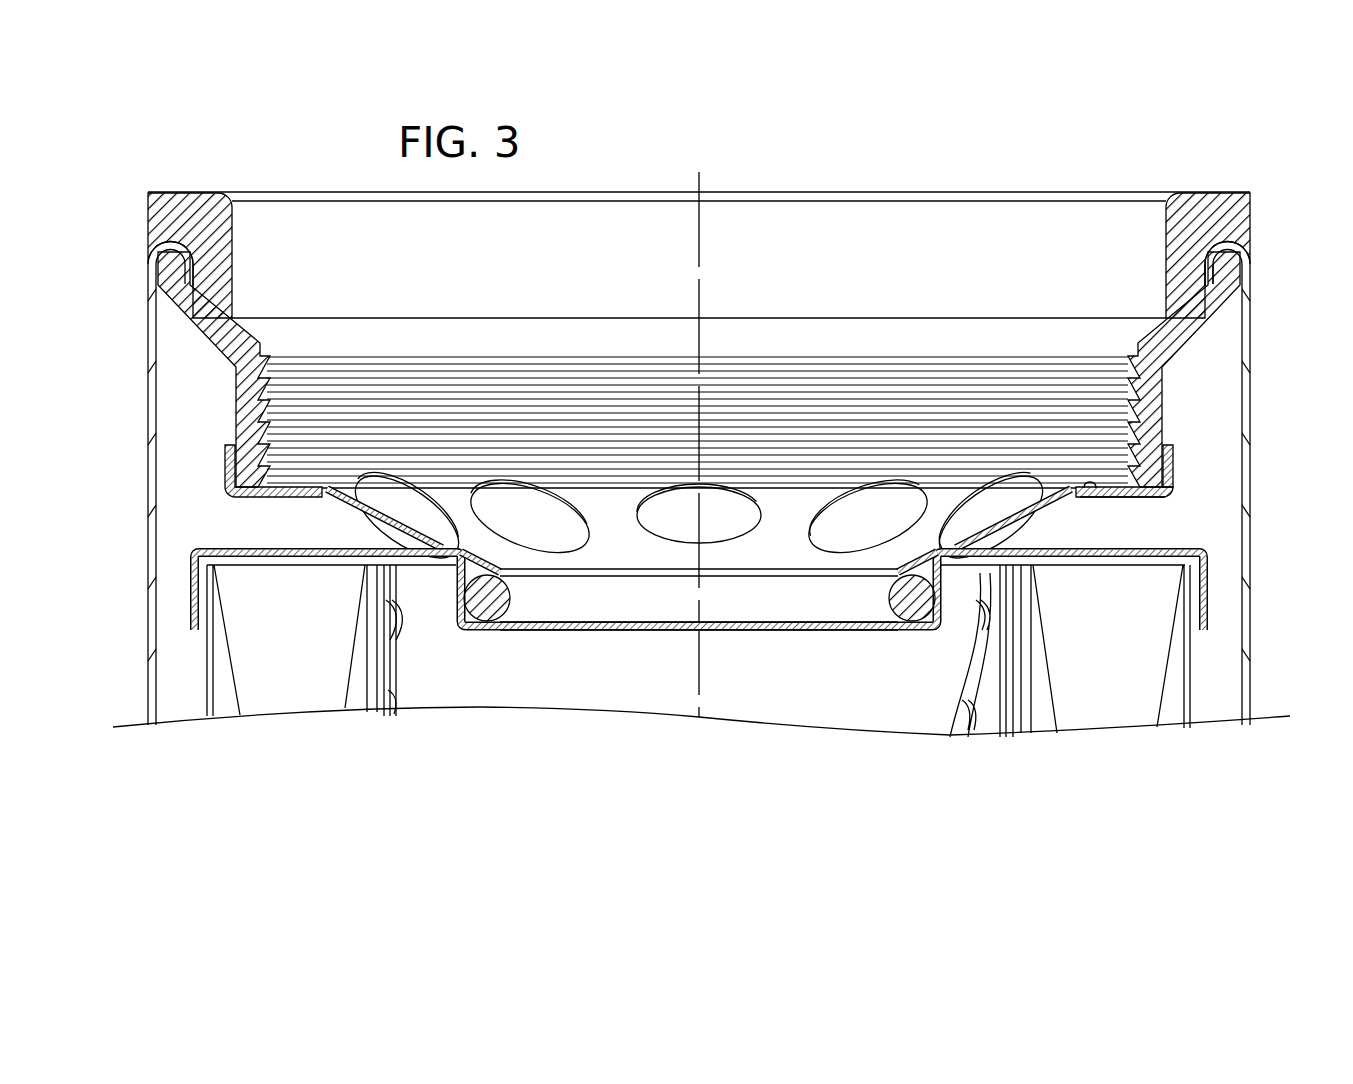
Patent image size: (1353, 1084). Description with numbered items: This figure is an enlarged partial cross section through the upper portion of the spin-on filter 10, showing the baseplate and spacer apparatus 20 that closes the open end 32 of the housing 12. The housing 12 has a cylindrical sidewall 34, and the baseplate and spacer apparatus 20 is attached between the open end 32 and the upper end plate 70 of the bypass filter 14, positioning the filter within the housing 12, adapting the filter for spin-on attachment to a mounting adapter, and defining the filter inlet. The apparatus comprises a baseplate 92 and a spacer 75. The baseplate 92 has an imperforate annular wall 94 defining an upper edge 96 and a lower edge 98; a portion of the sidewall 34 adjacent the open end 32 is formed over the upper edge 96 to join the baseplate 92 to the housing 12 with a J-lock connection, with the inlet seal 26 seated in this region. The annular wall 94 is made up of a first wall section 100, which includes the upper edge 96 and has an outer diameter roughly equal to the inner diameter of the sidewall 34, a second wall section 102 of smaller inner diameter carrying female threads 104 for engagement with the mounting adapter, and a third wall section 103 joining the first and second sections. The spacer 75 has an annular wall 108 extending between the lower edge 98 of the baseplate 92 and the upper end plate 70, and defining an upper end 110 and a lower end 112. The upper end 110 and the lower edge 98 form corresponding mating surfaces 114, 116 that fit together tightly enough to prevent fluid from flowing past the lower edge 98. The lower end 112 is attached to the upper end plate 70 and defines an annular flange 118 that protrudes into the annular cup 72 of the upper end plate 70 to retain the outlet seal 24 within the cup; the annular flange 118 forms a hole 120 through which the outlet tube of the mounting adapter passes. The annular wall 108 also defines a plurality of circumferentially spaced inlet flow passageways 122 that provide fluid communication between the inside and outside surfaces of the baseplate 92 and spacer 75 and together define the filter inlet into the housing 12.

The spin-on filter 10 is at (1268, 338).
The housing 12 is at (1247, 433).
The bypass filter 14 is at (1142, 590).
The baseplate and spacer apparatus 20 is at (197, 543).
The outlet seal 24 is at (511, 587).
The inlet seal 26 is at (147, 222).
The open end 32 is at (1248, 271).
The cylindrical sidewall 34 is at (1246, 248).
The upper end plate 70 is at (1165, 550).
The annular cup 72 is at (460, 631).
The spacer 75 is at (1132, 500).
The baseplate 92 is at (1195, 358).
The annular wall 94 is at (1157, 396).
The upper edge 96 is at (1180, 266).
The lower edge 98 is at (1174, 462).
The first wall section 100 is at (162, 322).
The second wall section 102 is at (240, 400).
The third wall section 103 is at (230, 345).
The female threads 104 is at (297, 393).
The annular wall 108 is at (347, 500).
The upper end 110 is at (242, 500).
The lower end 112 is at (368, 533).
The mating surface 114 is at (1124, 498).
The mating surface 116 is at (1090, 489).
The annular flange 118 is at (492, 566).
The hole 120 is at (878, 571).
The inlet flow passageways 122 is at (682, 530).